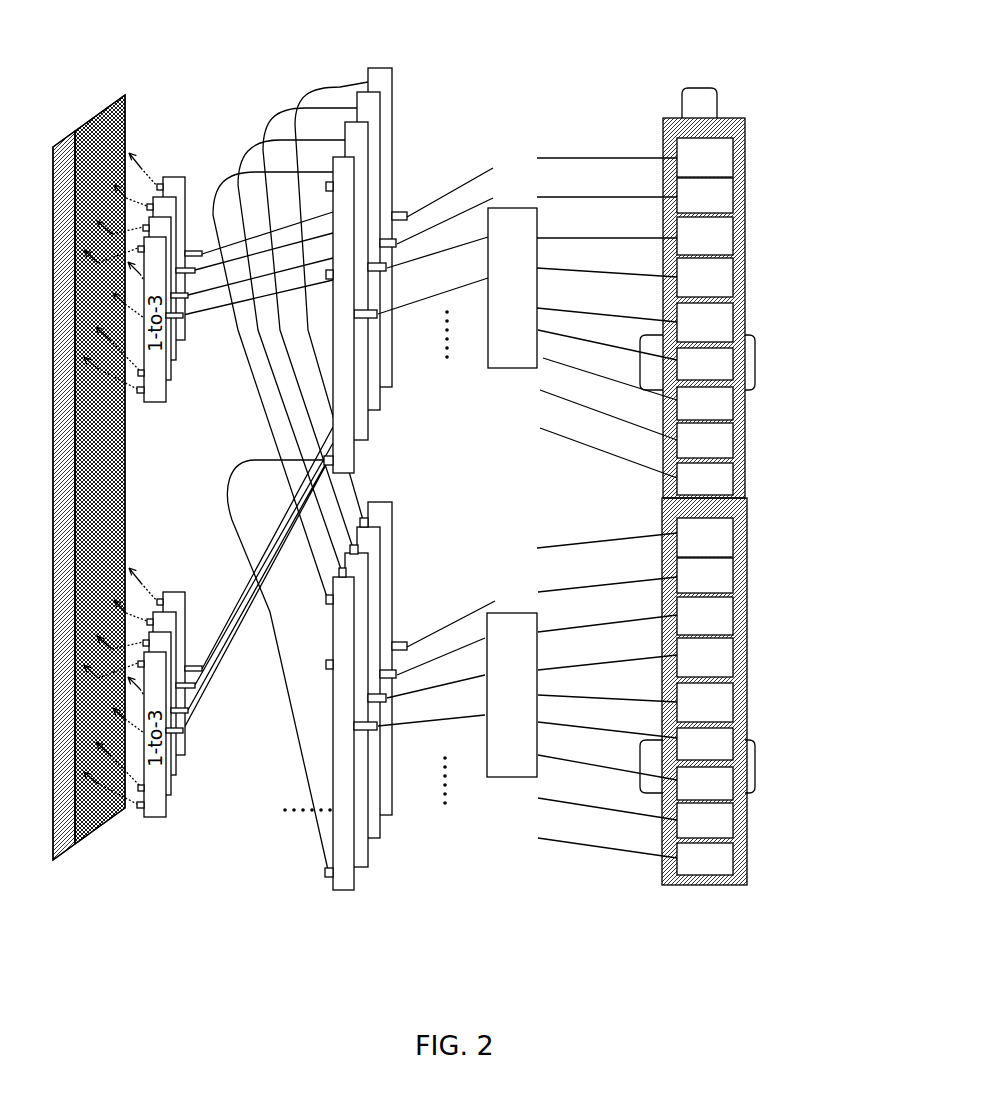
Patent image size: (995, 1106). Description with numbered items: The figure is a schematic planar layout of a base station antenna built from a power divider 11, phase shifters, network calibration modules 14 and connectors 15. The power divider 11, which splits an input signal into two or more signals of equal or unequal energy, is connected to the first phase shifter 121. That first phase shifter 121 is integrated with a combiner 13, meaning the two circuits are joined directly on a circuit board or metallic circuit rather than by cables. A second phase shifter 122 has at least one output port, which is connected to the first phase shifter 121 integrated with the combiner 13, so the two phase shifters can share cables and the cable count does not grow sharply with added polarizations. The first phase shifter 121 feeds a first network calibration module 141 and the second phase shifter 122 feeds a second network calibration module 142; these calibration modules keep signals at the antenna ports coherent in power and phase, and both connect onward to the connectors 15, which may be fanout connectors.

The power divider 11 is at (91, 119).
The first phase shifter 121 is at (365, 240).
The second phase shifter 122 is at (345, 820).
The combiner 13 is at (348, 175).
The network calibration module 14 is at (623, 431).
The first network calibration module 141 is at (513, 258).
The second network calibration module 142 is at (518, 662).
The connector 15 is at (700, 143).